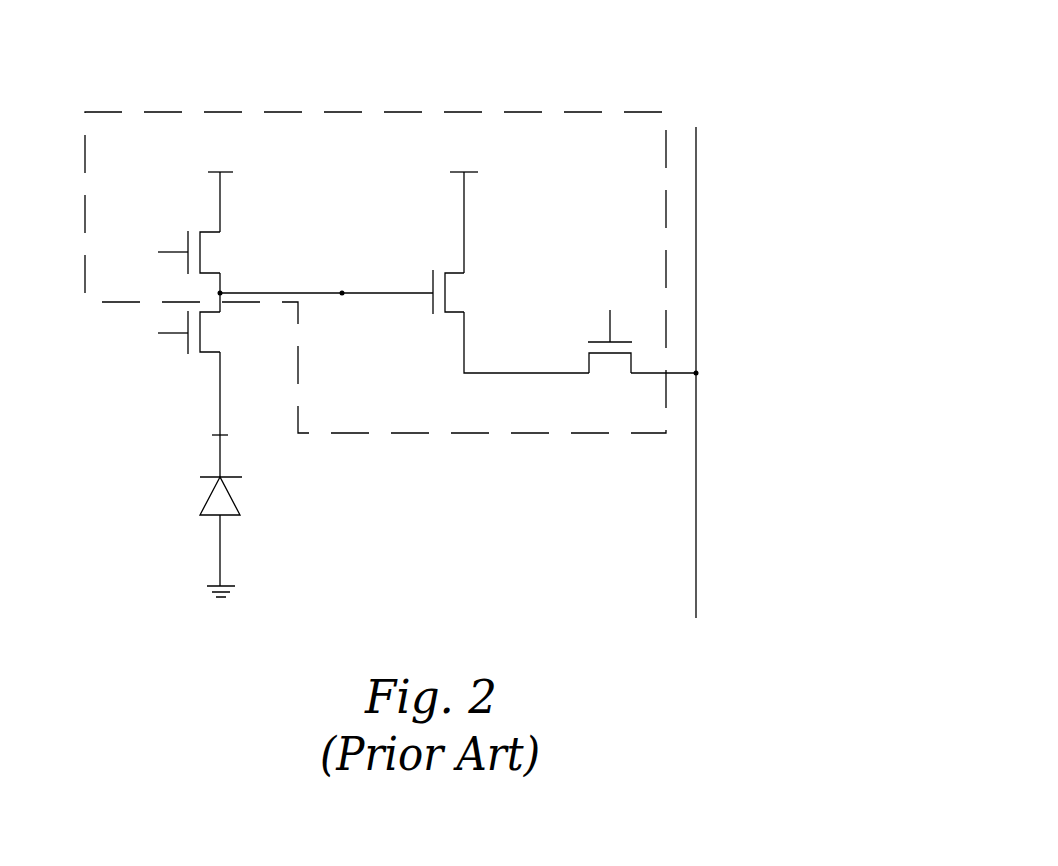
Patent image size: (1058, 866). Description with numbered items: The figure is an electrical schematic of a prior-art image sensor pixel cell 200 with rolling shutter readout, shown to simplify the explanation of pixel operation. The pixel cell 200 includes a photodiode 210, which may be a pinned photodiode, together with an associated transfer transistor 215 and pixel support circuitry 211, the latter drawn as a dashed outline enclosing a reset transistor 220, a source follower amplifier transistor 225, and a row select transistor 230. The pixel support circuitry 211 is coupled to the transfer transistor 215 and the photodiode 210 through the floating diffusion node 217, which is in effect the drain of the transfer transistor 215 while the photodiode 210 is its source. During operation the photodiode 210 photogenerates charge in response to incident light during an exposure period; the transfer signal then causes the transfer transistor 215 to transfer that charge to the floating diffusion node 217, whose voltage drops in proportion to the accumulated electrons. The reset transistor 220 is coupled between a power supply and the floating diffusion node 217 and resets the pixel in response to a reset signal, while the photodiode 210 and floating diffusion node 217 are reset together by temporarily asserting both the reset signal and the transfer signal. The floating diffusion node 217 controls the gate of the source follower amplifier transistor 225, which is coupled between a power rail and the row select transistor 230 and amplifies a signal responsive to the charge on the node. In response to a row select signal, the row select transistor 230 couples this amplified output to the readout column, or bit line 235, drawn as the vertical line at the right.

The image sensor pixel cell 200 is at (749, 76).
The pixel support circuitry 211 is at (150, 149).
The photodiode 210 is at (192, 474).
The transfer transistor 215 is at (188, 332).
The floating diffusion node 217 is at (342, 293).
The reset transistor 220 is at (186, 252).
The source follower amplifier transistor 225 is at (475, 281).
The row select transistor 230 is at (608, 344).
The bit line 235 is at (696, 530).